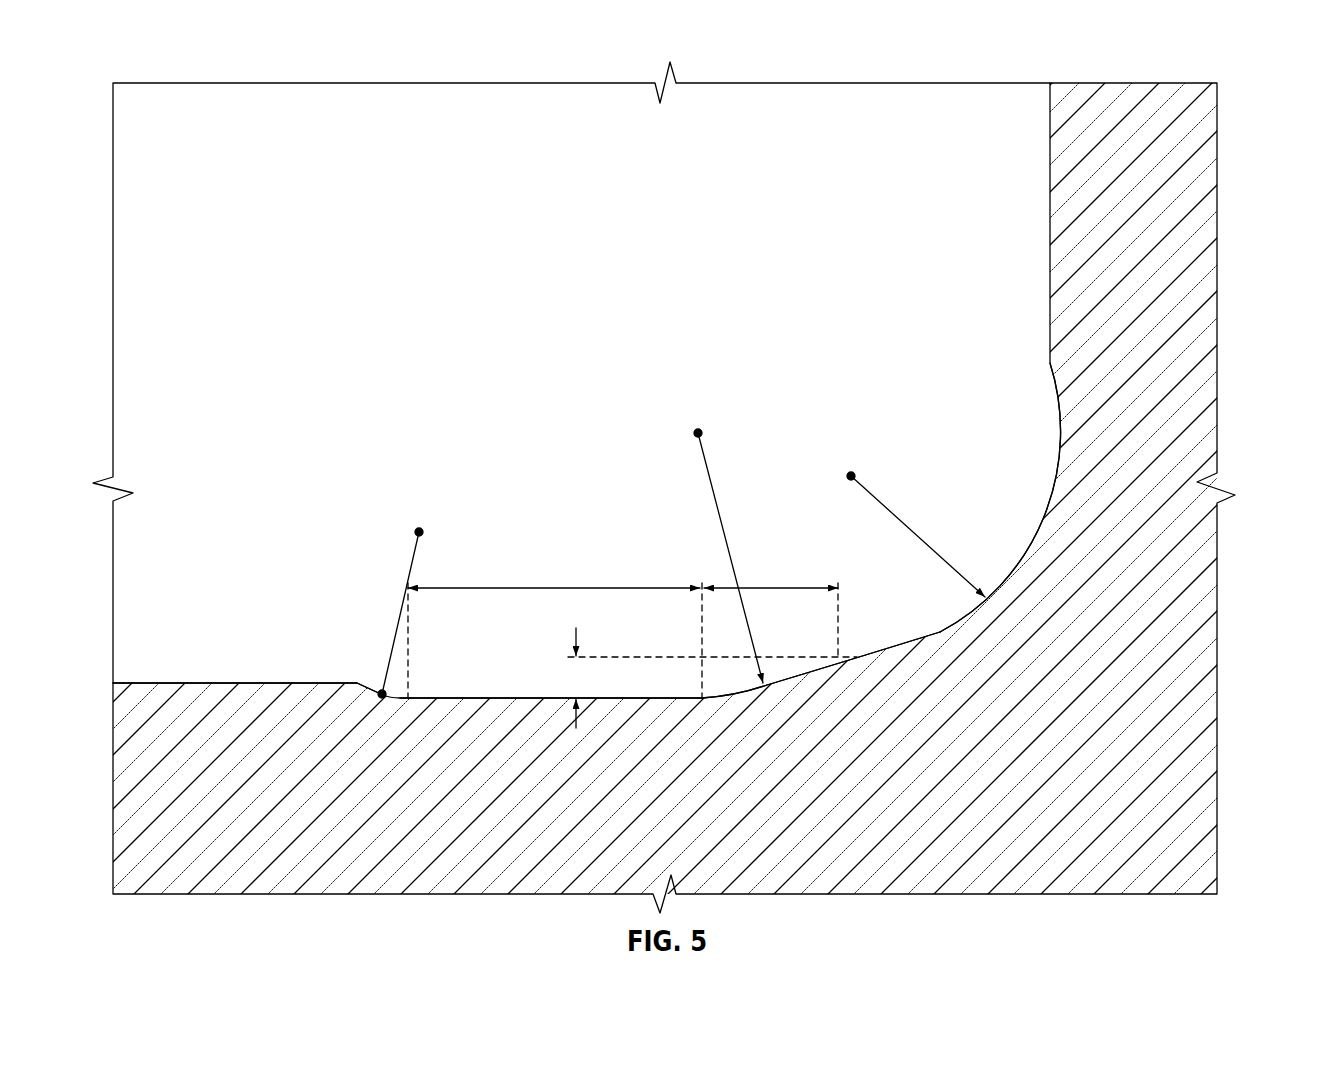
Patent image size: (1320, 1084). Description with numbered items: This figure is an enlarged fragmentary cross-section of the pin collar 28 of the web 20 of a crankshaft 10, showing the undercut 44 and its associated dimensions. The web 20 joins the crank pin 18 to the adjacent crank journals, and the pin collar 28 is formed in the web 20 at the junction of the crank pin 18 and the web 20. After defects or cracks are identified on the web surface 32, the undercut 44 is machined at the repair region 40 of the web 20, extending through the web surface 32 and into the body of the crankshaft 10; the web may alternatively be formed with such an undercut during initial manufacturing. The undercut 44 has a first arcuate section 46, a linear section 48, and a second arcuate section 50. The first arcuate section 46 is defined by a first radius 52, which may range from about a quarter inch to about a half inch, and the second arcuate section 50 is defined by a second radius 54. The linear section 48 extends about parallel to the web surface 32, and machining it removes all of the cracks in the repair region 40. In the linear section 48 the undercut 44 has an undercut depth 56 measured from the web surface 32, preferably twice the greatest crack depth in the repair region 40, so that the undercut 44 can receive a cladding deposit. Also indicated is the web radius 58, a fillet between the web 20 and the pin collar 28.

The crankshaft 10 is at (1247, 73).
The crank pin 18 is at (1185, 262).
The web 20 is at (803, 808).
The pin collar 28 is at (938, 633).
The web surface 32 is at (167, 683).
The repair region 40 is at (523, 662).
The undercut 44 is at (373, 653).
The first arcuate section 46 is at (808, 673).
The linear section 48 is at (502, 697).
The second arcuate section 50 is at (375, 690).
The first radius 52 is at (717, 495).
The second radius 54 is at (400, 613).
The undercut depth 56 is at (578, 637).
The web radius 58 is at (875, 500).